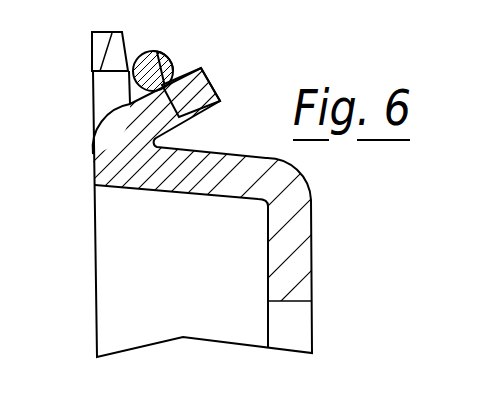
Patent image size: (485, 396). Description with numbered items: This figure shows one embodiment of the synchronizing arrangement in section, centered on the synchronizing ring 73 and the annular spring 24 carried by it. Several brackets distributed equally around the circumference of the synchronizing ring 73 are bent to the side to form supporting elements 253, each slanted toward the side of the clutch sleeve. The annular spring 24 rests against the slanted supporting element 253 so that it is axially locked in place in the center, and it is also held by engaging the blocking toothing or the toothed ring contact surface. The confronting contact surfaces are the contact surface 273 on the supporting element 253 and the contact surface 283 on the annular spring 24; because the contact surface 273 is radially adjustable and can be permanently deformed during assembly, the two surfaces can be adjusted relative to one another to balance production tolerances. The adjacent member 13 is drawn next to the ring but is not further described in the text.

The tapered member 13 is at (118, 46).
The contact surface 273 is at (149, 50).
The annular spring 24 is at (172, 64).
The supporting element 253 is at (210, 97).
The contact surface 283 is at (165, 87).
The synchronizing ring 73 is at (242, 198).